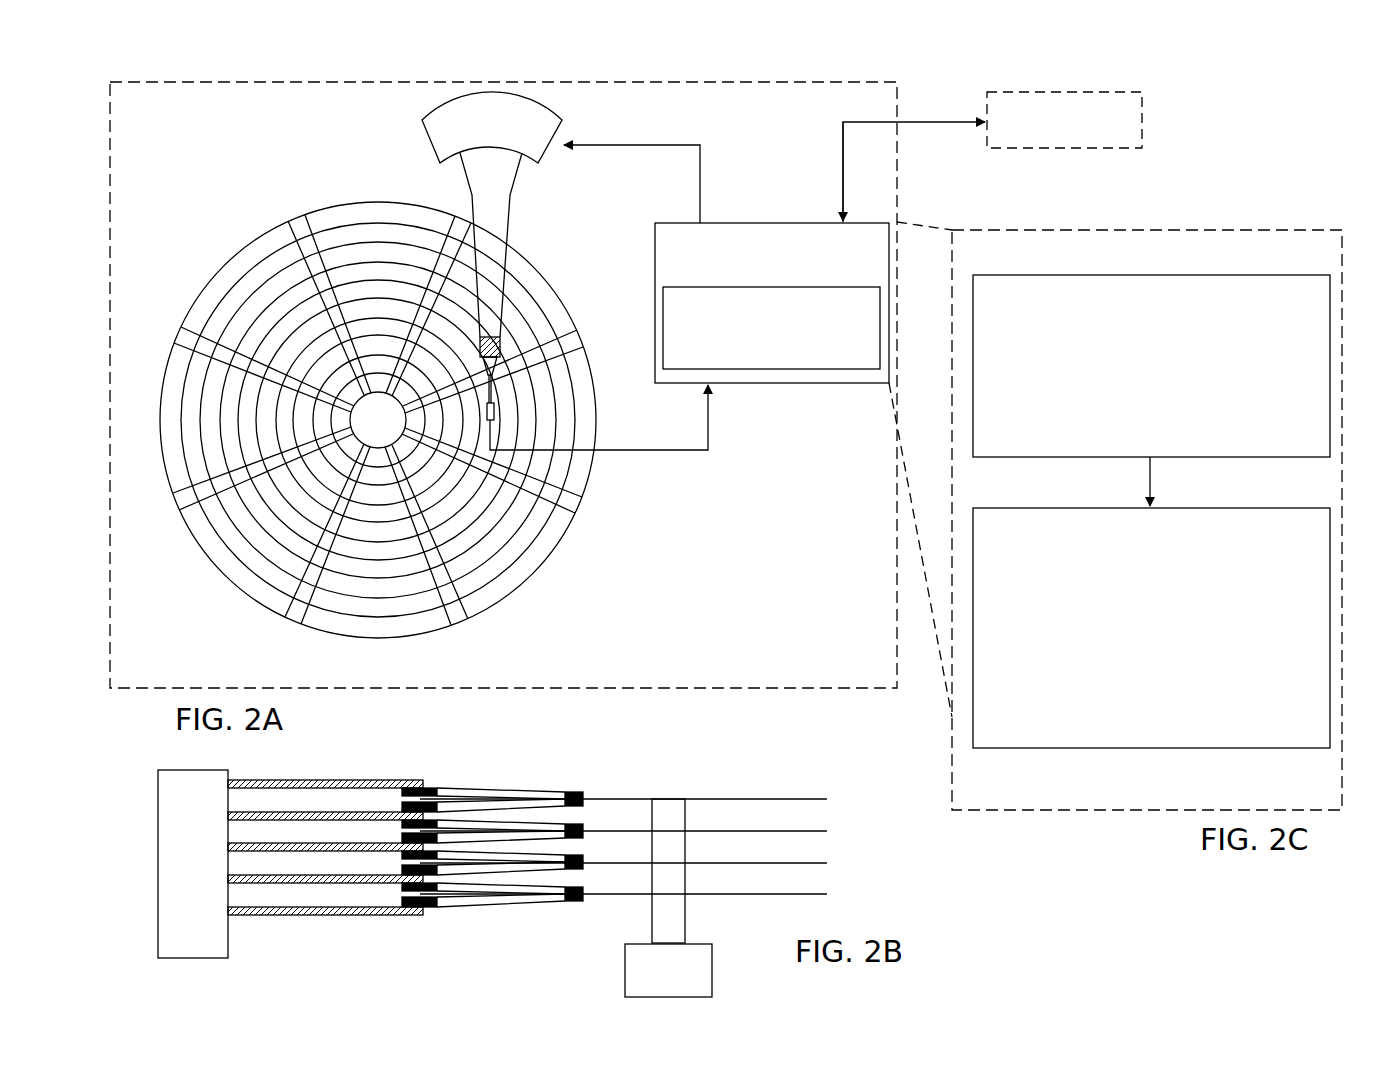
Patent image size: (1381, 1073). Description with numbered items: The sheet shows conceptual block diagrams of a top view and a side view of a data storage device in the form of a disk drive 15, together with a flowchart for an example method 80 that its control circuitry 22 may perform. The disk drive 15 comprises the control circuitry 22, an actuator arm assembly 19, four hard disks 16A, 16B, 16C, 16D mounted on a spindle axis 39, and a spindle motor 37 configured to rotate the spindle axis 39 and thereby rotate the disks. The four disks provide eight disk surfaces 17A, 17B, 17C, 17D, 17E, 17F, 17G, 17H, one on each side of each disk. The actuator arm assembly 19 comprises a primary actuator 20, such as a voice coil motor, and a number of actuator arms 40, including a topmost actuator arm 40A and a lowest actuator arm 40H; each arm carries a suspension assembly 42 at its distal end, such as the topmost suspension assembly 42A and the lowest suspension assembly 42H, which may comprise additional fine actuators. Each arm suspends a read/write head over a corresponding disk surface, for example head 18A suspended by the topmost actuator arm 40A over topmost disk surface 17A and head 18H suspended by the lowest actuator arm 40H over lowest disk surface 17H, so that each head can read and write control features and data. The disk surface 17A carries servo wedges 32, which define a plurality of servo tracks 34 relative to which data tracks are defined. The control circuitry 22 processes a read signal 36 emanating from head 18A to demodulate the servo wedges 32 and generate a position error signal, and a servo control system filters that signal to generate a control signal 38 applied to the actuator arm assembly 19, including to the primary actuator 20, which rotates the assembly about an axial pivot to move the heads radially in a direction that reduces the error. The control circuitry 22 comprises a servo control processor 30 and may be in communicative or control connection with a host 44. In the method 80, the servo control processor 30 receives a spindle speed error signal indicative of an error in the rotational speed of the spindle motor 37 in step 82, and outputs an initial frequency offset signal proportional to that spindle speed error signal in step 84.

In FIG. 2A, the disk drive 15 is at (832, 694).
In FIG. 2B, the hard disk 16A is at (830, 799).
In FIG. 2B, the hard disk 16B is at (830, 831).
In FIG. 2B, the hard disk 16C is at (830, 863).
In FIG. 2B, the hard disk 16D is at (830, 894).
In FIG. 2A, the disk surface 17A is at (226, 252).
In FIG. 2B, the disk surface 17A is at (797, 798).
In FIG. 2B, the disk surface 17B is at (790, 800).
In FIG. 2B, the disk surface 17C is at (797, 830).
In FIG. 2B, the disk surface 17D is at (790, 832).
In FIG. 2B, the disk surface 17E is at (787, 862).
In FIG. 2B, the disk surface 17F is at (778, 864).
In FIG. 2B, the disk surface 17G is at (787, 893).
In FIG. 2B, the disk surface 17H is at (778, 895).
In FIG. 2A, the read/write head 18A is at (500, 418).
In FIG. 2B, the read/write head 18A is at (588, 789).
In FIG. 2B, the read/write head 18H is at (588, 904).
In FIG. 2A, the actuator arm assembly 19 is at (548, 188).
In FIG. 2A, the primary actuator 20 is at (558, 150).
In FIG. 2B, the primary actuator 20 is at (158, 803).
In FIG. 2A, the control circuitry 22 is at (772, 303).
In FIG. 2A, the servo control processor 30 is at (771, 328).
In FIG. 2A, the servo wedges 32 is at (293, 222).
In FIG. 2A, the servo tracks 34 is at (386, 228).
In FIG. 2A, the read signal 36 is at (607, 465).
In FIG. 2B, the spindle motor 37 is at (668, 970).
In FIG. 2A, the control signal 38 is at (700, 168).
In FIG. 2B, the spindle axis 39 is at (668, 797).
In FIG. 2B, the actuator arms 40 is at (332, 866).
In FIG. 2A, the topmost actuator arm 40A is at (512, 229).
In FIG. 2B, the topmost actuator arm 40A is at (342, 780).
In FIG. 2B, the lowest actuator arm 40H is at (297, 915).
In FIG. 2B, the suspension assembly 42 is at (516, 866).
In FIG. 2B, the topmost suspension assembly 42A is at (522, 780).
In FIG. 2B, the suspension assembly 42H is at (518, 910).
In FIG. 2A, the host 44 is at (992, 157).
In FIG. 2C, the method 80 is at (1262, 216).
In FIG. 2C, the receiving step 82 is at (1268, 457).
In FIG. 2C, the outputting step 84 is at (1258, 748).